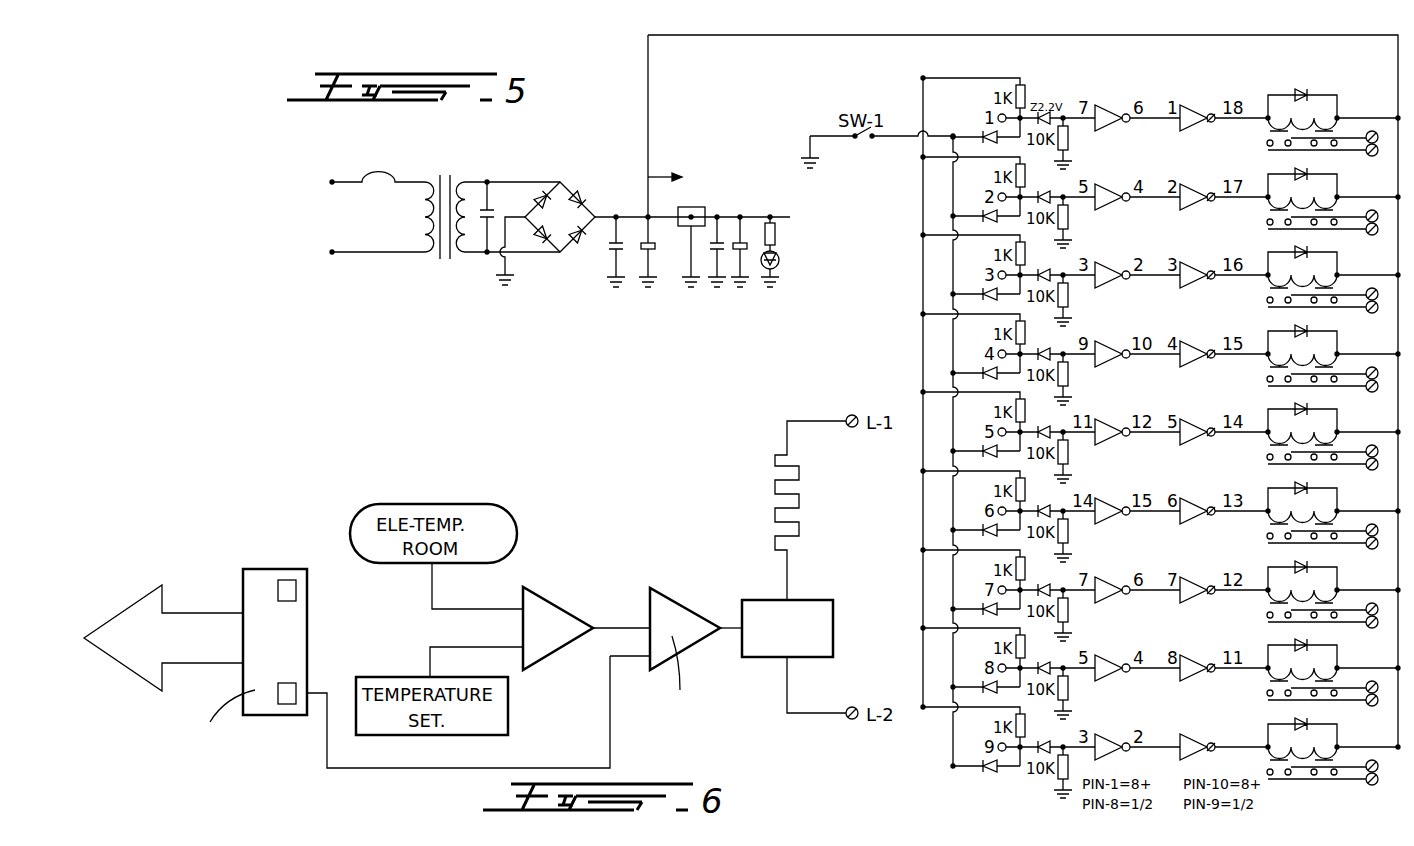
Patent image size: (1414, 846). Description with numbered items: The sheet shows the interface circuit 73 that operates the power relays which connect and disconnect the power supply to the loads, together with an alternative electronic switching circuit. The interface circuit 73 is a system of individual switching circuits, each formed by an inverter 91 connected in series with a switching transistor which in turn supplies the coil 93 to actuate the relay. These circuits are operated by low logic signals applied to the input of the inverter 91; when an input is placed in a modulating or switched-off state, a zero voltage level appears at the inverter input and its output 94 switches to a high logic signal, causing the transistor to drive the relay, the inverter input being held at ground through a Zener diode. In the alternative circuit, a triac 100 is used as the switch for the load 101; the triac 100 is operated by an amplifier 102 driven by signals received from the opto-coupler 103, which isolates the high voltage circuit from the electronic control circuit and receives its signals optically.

In FIG. 5, the interface circuit 73 is at (635, 62).
In FIG. 5, the inverter 91 is at (1106, 102).
In FIG. 5, the coil 93 is at (1265, 108).
In FIG. 5, the output 94 is at (1340, 86).
In FIG. 6, the triac 100 is at (668, 608).
In FIG. 6, the load 101 is at (810, 603).
In FIG. 6, the amplifier 102 is at (543, 598).
In FIG. 6, the opto-coupler 103 is at (258, 578).